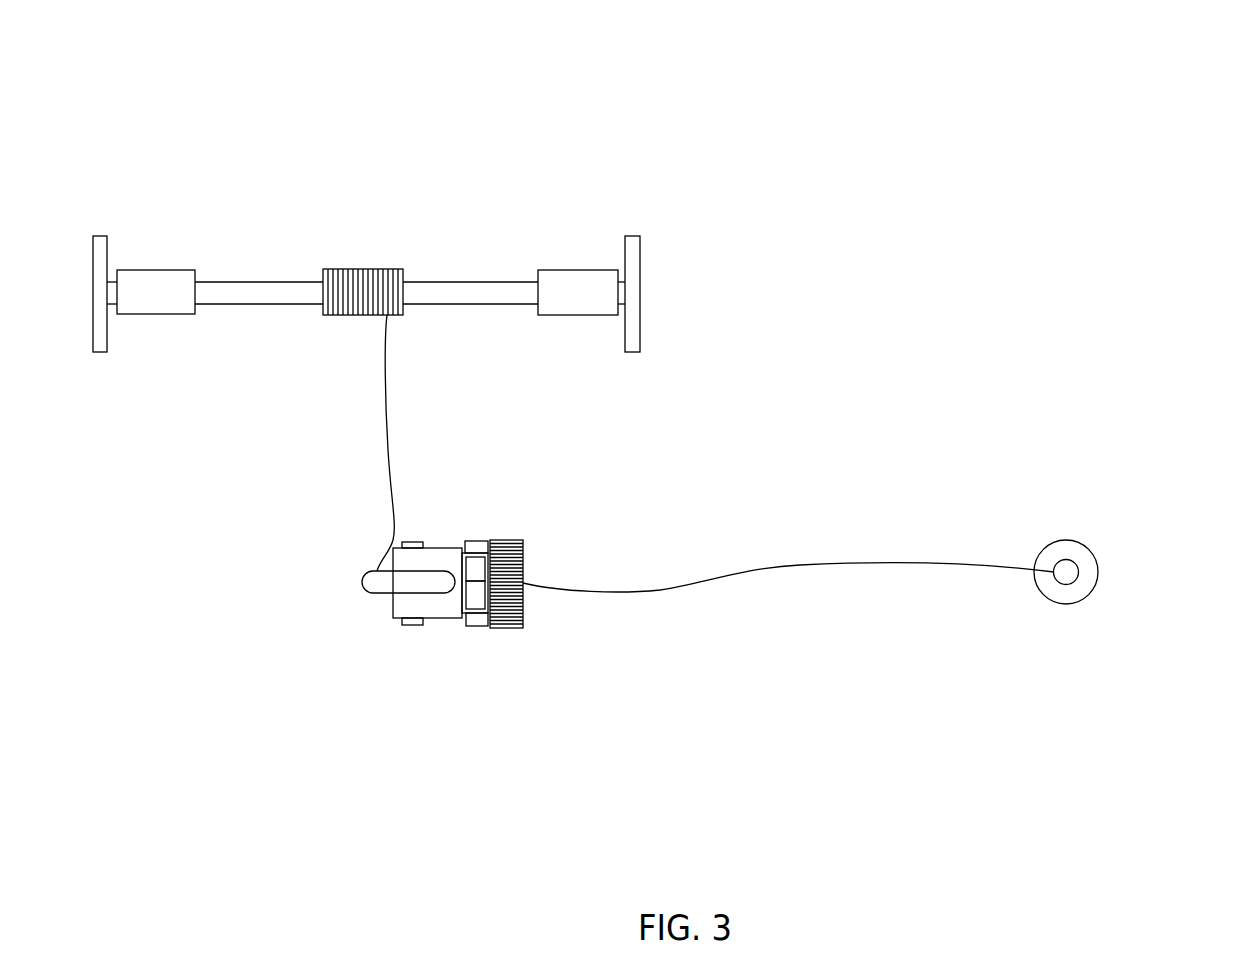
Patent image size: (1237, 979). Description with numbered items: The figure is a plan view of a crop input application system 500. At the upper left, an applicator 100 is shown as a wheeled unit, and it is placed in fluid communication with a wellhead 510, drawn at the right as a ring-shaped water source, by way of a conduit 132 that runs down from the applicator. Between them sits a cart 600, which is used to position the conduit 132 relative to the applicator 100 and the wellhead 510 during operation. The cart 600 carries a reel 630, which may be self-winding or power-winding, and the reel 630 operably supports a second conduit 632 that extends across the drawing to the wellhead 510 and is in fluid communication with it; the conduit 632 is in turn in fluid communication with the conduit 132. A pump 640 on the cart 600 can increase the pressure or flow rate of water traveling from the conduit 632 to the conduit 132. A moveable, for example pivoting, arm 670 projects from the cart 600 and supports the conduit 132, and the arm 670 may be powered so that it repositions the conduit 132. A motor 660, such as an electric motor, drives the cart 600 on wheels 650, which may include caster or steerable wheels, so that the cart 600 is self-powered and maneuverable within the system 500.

The applicator 100 is at (52, 210).
The crop input application system 500 is at (1215, 29).
The conduit 132 is at (387, 413).
The cart 600 is at (388, 649).
The pump 640 is at (462, 602).
The moveable arm 670 is at (382, 594).
The motor 660 is at (462, 563).
The wheels 650 is at (477, 540).
The reel 630 is at (524, 610).
The conduit 632 is at (837, 563).
The wellhead 510 is at (1066, 540).